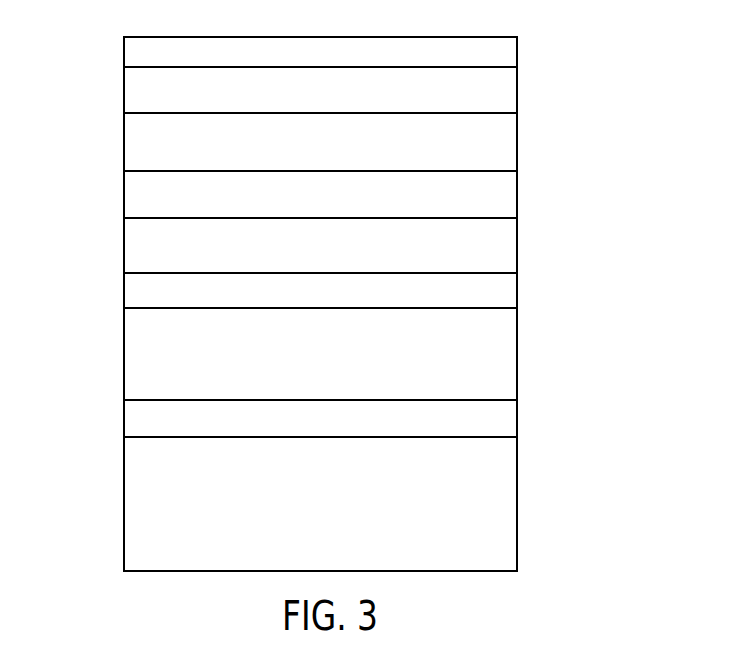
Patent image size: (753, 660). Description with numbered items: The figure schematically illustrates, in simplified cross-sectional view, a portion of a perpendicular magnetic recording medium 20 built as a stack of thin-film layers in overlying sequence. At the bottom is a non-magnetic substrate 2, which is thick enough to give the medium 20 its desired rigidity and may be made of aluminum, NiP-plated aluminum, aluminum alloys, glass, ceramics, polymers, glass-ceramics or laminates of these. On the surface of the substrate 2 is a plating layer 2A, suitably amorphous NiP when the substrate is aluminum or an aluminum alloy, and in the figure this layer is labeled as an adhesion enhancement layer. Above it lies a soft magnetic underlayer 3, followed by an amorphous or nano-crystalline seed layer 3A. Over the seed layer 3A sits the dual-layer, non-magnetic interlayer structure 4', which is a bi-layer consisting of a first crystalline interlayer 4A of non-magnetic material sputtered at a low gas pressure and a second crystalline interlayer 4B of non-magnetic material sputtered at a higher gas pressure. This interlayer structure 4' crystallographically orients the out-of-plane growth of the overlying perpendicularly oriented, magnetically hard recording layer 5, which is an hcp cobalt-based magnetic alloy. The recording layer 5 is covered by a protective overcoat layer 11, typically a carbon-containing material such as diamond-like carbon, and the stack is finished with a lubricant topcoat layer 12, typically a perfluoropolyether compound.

The perpendicular magnetic recording medium 20 is at (86, 113).
The lubricant topcoat layer 12 is at (512, 50).
The protective overcoat layer 11 is at (512, 88).
The perpendicular magnetic recording layer 5 is at (512, 140).
The second crystalline interlayer 4B is at (512, 193).
The first crystalline interlayer 4A is at (512, 242).
The dual-layer non-magnetic interlayer structure 4' is at (398, 225).
The seed layer 3A is at (512, 286).
The soft magnetic underlayer 3 is at (512, 349).
The plating layer 2A is at (512, 416).
The non-magnetic substrate 2 is at (512, 493).